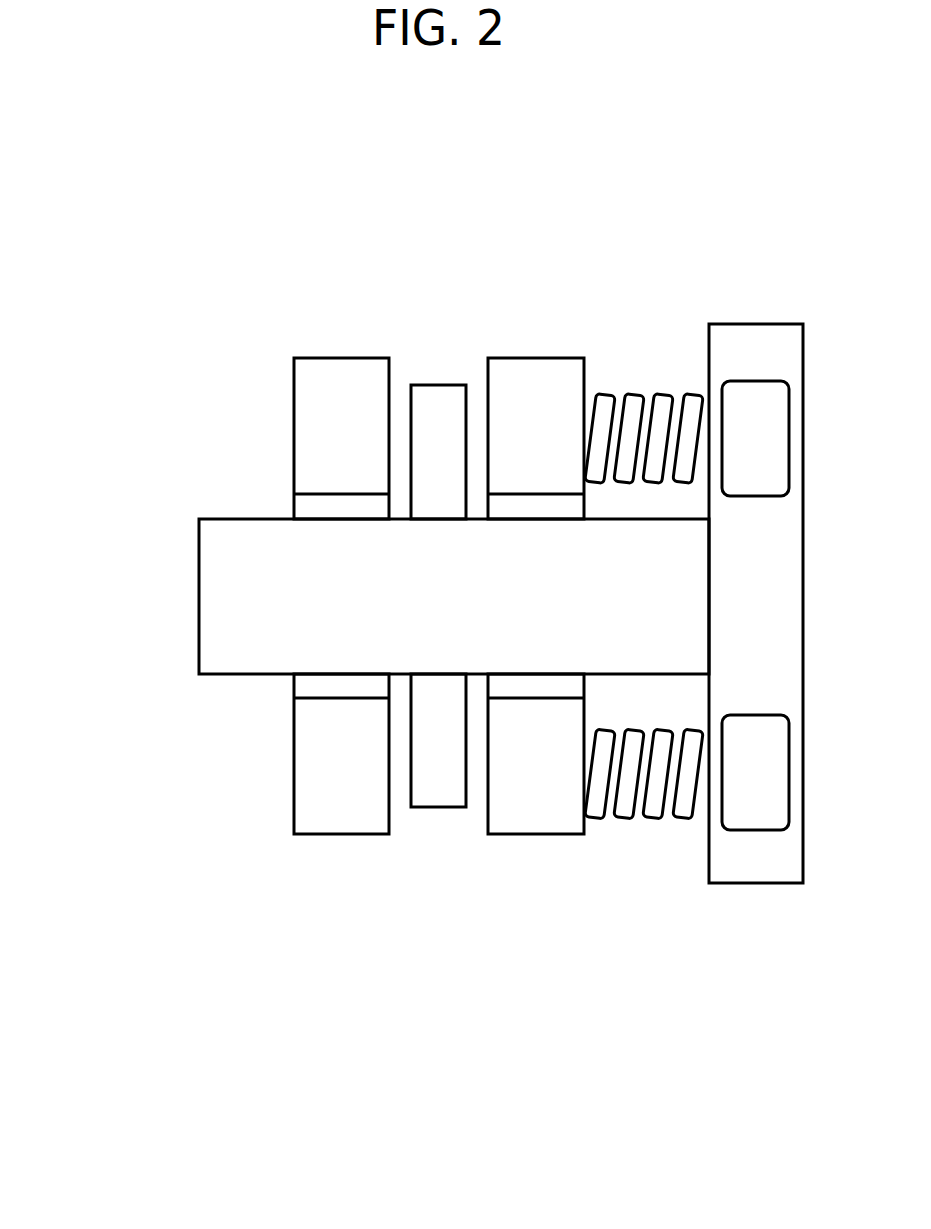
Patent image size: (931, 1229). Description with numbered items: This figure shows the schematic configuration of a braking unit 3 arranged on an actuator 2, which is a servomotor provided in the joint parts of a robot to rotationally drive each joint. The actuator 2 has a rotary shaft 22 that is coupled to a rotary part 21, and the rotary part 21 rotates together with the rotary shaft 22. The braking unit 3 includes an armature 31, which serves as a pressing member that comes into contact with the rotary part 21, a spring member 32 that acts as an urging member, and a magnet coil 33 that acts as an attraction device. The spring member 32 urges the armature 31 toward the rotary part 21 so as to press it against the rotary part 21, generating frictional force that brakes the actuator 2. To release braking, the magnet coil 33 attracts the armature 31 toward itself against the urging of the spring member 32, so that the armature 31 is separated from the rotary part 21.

The actuator 2 is at (127, 459).
The rotary part 21 is at (439, 395).
The rotary shaft 22 is at (213, 605).
The braking unit 3 is at (755, 228).
The armature 31 is at (533, 370).
The spring member 32 is at (648, 400).
The magnet coil 33 is at (753, 403).